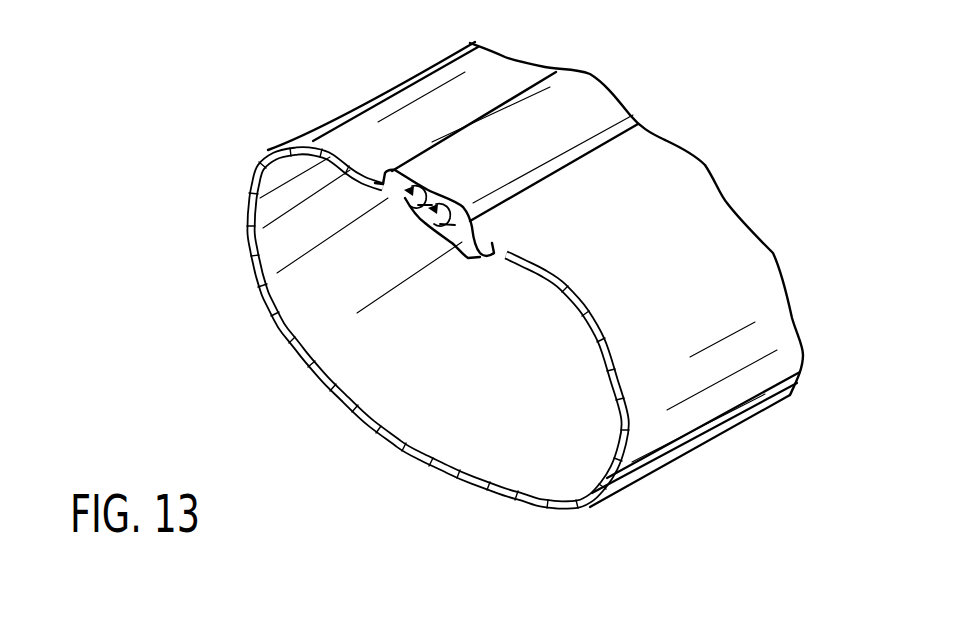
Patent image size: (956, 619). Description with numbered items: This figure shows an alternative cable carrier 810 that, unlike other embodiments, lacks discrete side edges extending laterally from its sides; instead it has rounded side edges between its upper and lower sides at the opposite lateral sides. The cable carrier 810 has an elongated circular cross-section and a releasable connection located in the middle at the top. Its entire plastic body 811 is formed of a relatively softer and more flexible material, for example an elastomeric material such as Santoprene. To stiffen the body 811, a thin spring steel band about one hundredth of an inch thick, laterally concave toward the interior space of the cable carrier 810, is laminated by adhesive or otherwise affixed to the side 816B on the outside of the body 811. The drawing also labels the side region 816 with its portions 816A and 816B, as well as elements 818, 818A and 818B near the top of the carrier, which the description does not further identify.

The cable carrier 810 is at (280, 95).
The plastic body 811 is at (267, 160).
The link band 816 is at (450, 485).
The first link 816A is at (402, 452).
The side 816B is at (370, 388).
The strap 818 is at (390, 105).
The first strap portion 818A is at (520, 75).
The second strap portion 818B is at (655, 160).